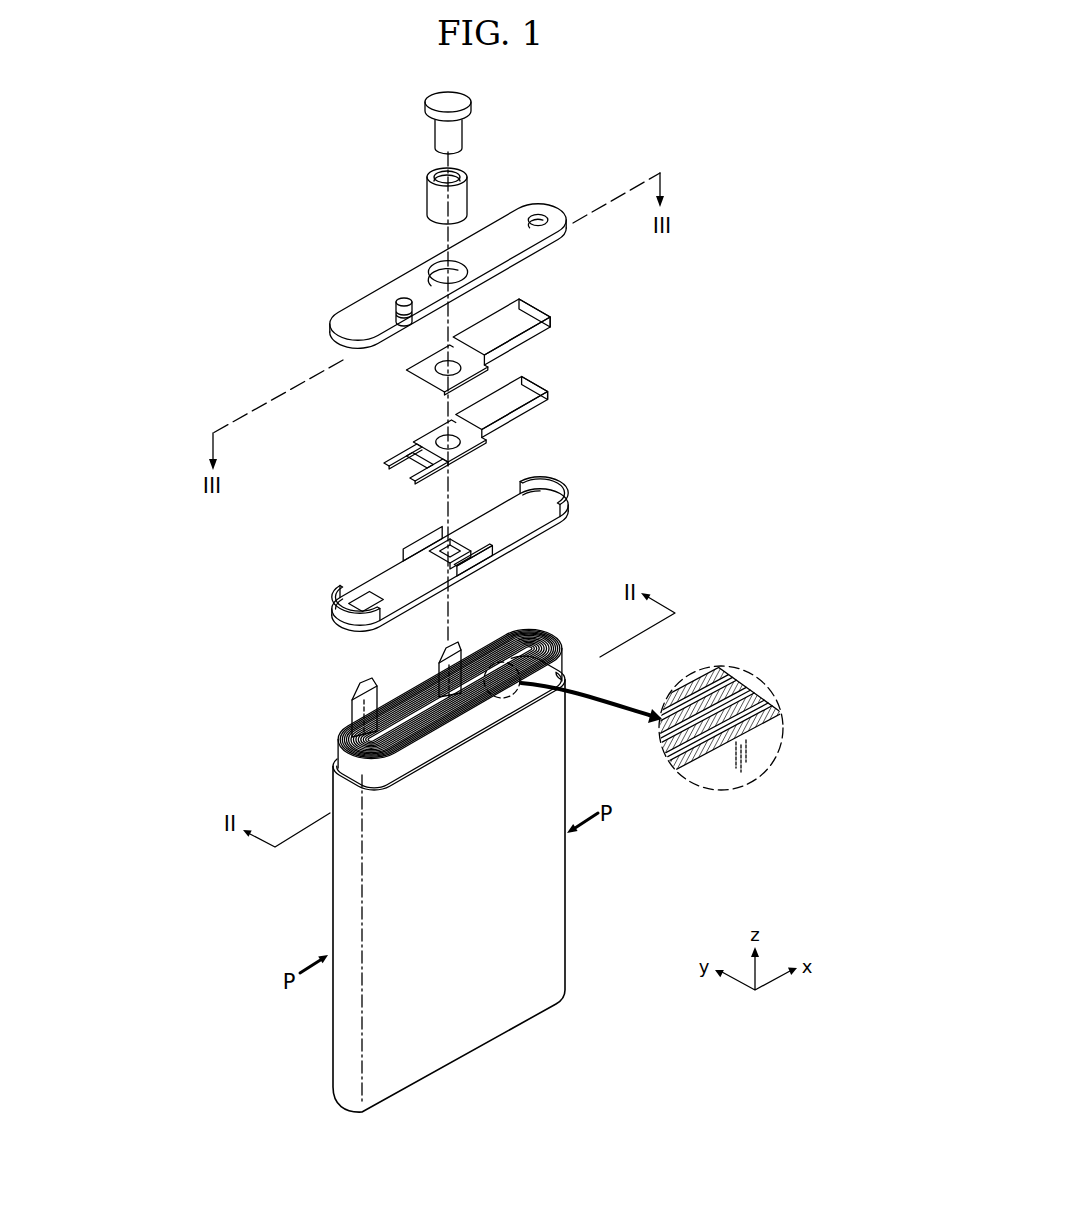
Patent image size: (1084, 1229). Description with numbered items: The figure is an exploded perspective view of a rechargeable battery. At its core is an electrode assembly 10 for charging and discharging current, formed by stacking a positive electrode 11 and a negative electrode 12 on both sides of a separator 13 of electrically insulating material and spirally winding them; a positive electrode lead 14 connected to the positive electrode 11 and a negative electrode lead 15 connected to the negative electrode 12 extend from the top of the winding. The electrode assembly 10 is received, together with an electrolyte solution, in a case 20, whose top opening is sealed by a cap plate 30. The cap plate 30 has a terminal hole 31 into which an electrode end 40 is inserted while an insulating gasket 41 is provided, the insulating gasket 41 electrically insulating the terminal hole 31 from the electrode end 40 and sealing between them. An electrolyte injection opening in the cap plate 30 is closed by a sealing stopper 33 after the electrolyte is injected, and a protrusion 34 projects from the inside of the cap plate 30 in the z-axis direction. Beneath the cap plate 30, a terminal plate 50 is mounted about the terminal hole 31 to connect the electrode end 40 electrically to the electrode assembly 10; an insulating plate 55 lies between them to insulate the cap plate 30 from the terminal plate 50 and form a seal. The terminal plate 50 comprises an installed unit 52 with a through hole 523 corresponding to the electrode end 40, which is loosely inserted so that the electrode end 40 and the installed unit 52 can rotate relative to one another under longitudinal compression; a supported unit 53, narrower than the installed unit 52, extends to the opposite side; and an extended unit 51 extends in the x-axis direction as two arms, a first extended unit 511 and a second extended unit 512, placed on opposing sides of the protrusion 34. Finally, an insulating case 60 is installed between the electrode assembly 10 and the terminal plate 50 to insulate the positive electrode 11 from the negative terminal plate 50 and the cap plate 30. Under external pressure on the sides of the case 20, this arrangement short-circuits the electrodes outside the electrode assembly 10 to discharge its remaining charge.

The electrode assembly 10 is at (556, 627).
The positive electrode 11 is at (750, 687).
The negative electrode 12 is at (772, 703).
The separator 13 is at (676, 753).
The positive electrode lead 14 is at (358, 683).
The negative electrode lead 15 is at (462, 651).
The case 20 is at (575, 938).
The cap plate 30 is at (436, 282).
The terminal hole 31 is at (432, 270).
The sealing stopper 33 is at (538, 212).
The protrusion 34 is at (399, 330).
The electrode end 40 is at (427, 112).
The insulating gasket 41 is at (436, 203).
The terminal plate 50 is at (426, 426).
The extended unit 51 is at (352, 481).
The first extended unit 511 is at (412, 478).
The second extended unit 512 is at (383, 460).
The installed unit 52 is at (419, 456).
The through hole 523 is at (437, 440).
The supported unit 53 is at (506, 404).
The insulating plate 55 is at (548, 302).
The insulating case 60 is at (540, 510).